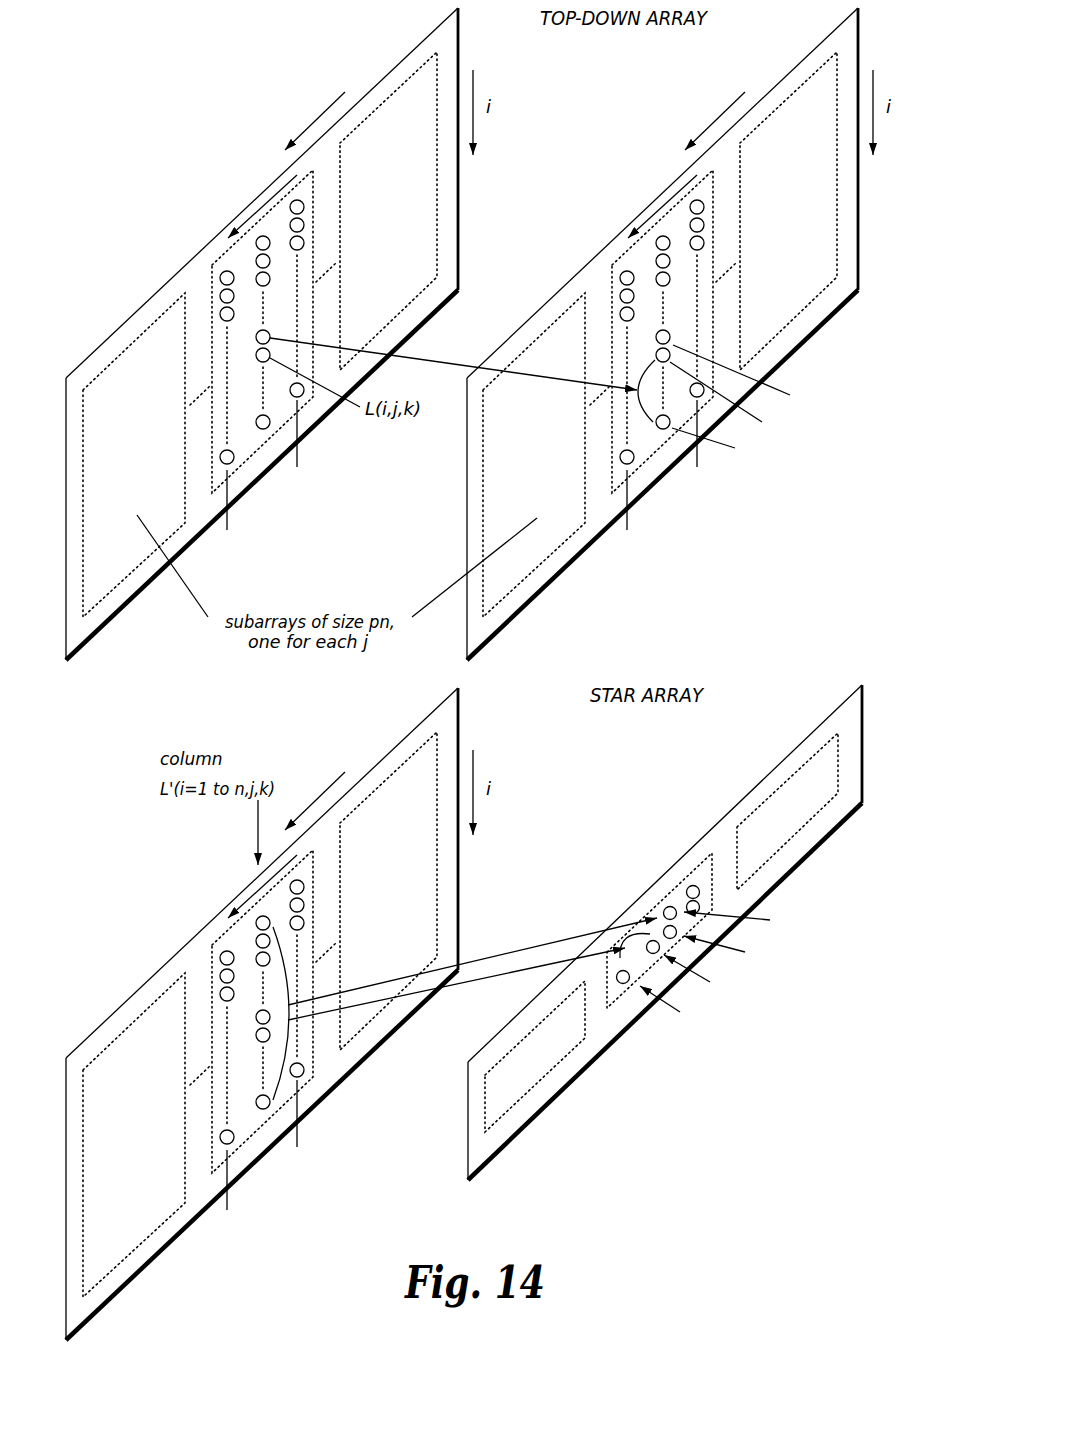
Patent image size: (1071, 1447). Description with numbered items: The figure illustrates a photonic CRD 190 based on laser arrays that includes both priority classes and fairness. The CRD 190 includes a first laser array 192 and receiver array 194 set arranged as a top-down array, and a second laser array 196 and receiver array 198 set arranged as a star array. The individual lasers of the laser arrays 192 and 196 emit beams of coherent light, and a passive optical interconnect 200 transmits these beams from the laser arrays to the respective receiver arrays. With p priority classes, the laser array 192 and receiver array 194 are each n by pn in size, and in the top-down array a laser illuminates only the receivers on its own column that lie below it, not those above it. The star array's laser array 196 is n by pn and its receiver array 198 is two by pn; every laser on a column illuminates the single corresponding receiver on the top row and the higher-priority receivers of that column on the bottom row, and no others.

The photonic CRD 190 is at (765, 549).
The first laser array 192 is at (162, 287).
The receiver array 194 is at (550, 588).
The second laser array 196 is at (162, 967).
The receiver array 198 is at (550, 1108).
The passive optical interconnect 200 is at (597, 200).